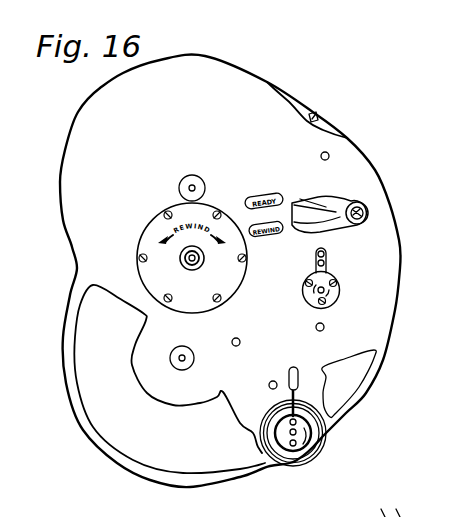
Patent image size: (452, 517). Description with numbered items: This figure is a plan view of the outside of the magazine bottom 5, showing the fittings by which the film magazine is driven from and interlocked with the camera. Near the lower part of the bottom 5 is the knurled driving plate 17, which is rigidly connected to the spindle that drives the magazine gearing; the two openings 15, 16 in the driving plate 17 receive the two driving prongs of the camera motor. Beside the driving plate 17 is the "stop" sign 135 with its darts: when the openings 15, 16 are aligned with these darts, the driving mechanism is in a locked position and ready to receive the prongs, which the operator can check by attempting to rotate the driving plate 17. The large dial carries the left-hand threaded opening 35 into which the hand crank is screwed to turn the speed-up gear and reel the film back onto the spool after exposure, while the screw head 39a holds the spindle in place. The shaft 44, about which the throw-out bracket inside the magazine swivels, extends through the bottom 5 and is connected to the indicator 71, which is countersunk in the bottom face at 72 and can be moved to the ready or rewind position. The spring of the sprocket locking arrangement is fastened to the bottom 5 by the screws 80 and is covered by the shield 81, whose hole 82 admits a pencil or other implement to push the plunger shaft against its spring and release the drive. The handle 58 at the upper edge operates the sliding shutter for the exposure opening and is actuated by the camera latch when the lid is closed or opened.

The bottom 5 is at (396, 270).
The opening 15 is at (268, 463).
The opening 16 is at (291, 422).
The driving plate 17 is at (305, 452).
The opening 35 is at (186, 259).
The screw head 39a is at (180, 358).
The shaft 44 is at (368, 213).
The handle 58 is at (319, 118).
The indicator 71 is at (338, 208).
The countersunk recess 72 is at (308, 230).
The screws 80 is at (326, 263).
The shield 81 is at (335, 302).
The hole 82 is at (322, 290).
The stop sign 135 is at (297, 370).